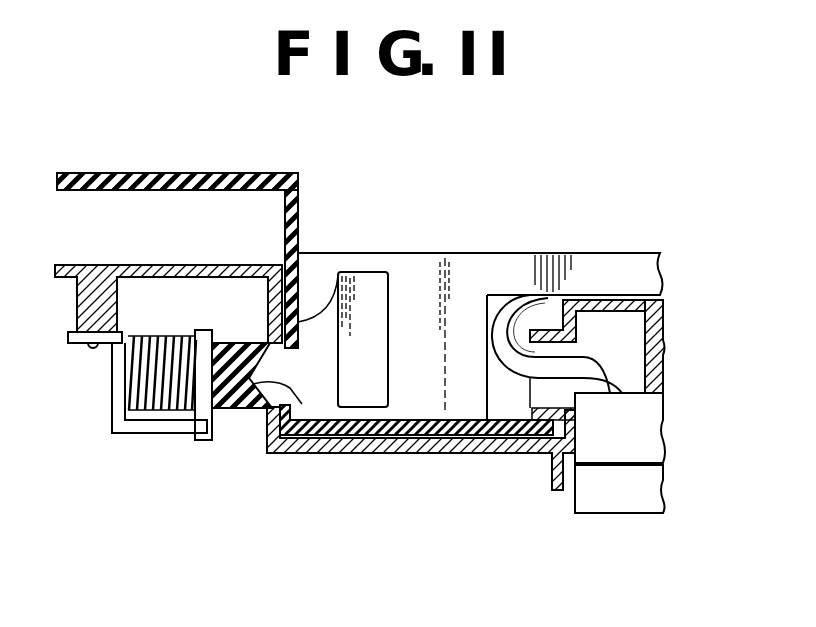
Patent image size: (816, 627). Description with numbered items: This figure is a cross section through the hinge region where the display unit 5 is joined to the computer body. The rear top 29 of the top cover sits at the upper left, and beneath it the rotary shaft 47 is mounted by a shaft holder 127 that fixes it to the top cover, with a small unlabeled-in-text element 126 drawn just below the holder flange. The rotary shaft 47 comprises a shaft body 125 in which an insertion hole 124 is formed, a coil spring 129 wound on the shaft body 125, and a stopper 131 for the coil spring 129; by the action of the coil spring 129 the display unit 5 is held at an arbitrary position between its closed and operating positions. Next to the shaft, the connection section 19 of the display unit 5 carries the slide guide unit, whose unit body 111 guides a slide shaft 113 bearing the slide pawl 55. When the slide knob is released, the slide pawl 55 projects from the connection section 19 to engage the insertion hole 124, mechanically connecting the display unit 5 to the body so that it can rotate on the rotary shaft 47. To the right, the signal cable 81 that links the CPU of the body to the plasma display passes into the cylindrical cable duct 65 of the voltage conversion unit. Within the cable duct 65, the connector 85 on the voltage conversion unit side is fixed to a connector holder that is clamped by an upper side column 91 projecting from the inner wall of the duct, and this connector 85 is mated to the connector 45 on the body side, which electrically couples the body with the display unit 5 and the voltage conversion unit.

The display unit 5 is at (191, 172).
The connection section 19 is at (288, 240).
The rear top 29 is at (135, 265).
The rotary shaft 47 is at (232, 340).
The slide pawl 55 is at (307, 404).
The cable duct 65 is at (623, 297).
The signal cable 81 is at (512, 296).
The connector on the side of the voltage conversion unit 85 is at (652, 423).
The upper side column 91 is at (665, 343).
The connector on the body side 45 is at (652, 485).
The unit body 111 is at (445, 262).
The slide shaft 113 is at (366, 285).
The insertion hole 124 is at (268, 456).
The shaft body 125 is at (248, 410).
The stop 126 is at (93, 349).
The shaft holder 127 is at (123, 433).
The coil spring 129 is at (165, 412).
The stopper 131 is at (204, 442).